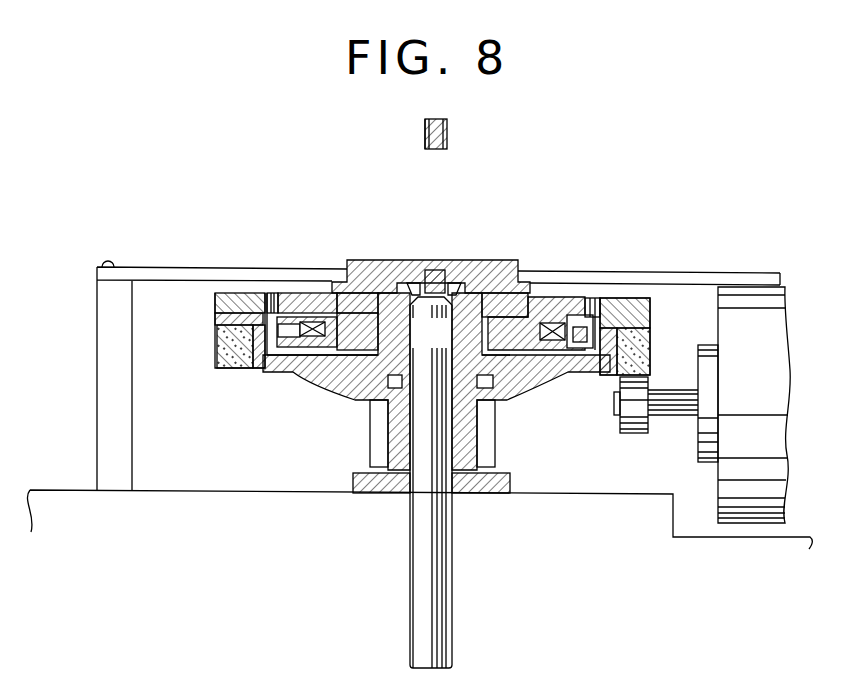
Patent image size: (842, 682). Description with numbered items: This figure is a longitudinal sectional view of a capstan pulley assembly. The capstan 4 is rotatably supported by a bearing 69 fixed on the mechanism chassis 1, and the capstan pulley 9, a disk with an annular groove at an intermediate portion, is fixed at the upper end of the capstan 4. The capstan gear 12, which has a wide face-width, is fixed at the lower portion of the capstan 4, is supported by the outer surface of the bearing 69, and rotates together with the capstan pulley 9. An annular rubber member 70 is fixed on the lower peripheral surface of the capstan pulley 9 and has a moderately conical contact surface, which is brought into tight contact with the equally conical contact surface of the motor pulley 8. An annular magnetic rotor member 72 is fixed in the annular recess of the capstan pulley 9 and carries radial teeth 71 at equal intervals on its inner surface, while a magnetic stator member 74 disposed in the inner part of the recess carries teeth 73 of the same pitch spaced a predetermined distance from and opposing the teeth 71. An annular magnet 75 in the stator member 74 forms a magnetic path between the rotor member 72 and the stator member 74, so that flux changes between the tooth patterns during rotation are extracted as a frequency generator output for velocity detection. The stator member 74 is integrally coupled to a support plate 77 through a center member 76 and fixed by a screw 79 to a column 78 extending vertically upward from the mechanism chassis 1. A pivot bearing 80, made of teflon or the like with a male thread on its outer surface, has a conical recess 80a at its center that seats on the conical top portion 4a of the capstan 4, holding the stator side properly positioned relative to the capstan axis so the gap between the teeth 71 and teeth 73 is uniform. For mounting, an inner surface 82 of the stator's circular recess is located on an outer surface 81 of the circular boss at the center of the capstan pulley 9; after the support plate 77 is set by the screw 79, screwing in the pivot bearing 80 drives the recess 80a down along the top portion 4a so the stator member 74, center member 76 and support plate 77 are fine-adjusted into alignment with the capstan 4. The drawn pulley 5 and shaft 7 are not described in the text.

The mechanism chassis 1 is at (58, 505).
The capstan 4 is at (440, 520).
The conical top portion 4a is at (431, 321).
The pulley 5 is at (748, 300).
The shaft 7 is at (680, 405).
The motor pulley 8 is at (634, 425).
The capstan pulley 9 is at (322, 378).
The capstan gear 12 is at (372, 435).
The bearing 69 is at (392, 486).
The annular rubber member 70 is at (220, 352).
The radial teeth 71 is at (282, 296).
The annular magnetic rotor member 72 is at (241, 298).
The teeth 73 is at (605, 298).
The magnetic stator member 74 is at (546, 297).
The annular magnet 75 is at (556, 340).
The center member 76 is at (486, 283).
The support plate 77 is at (178, 267).
The column 78 is at (122, 460).
The screw 79 is at (114, 262).
The pivot bearing 80 is at (433, 272).
The conical recess 80a is at (434, 148).
The outer surface of circular boss 81 is at (498, 352).
The inner surface of circular recess 82 is at (386, 283).